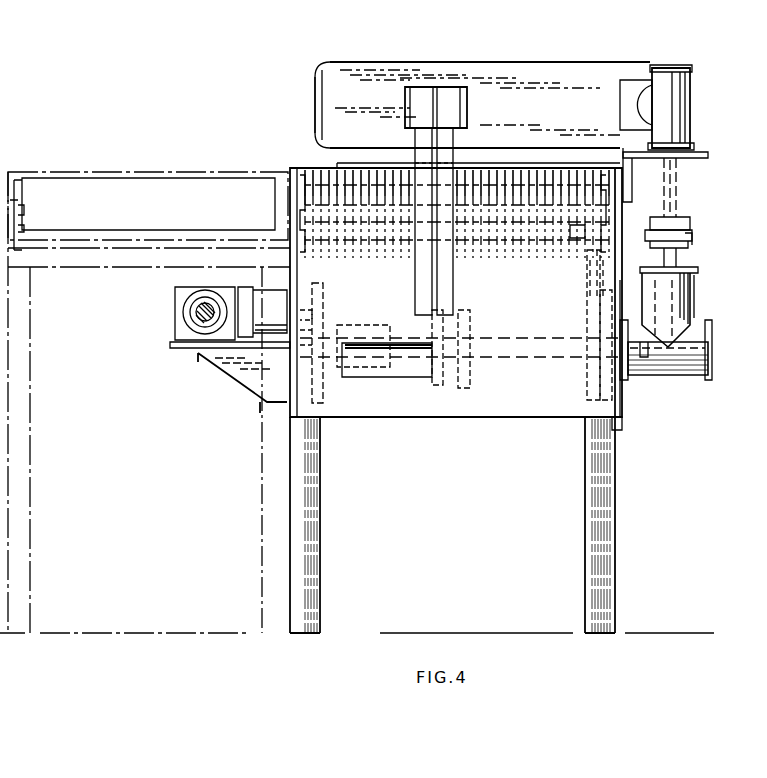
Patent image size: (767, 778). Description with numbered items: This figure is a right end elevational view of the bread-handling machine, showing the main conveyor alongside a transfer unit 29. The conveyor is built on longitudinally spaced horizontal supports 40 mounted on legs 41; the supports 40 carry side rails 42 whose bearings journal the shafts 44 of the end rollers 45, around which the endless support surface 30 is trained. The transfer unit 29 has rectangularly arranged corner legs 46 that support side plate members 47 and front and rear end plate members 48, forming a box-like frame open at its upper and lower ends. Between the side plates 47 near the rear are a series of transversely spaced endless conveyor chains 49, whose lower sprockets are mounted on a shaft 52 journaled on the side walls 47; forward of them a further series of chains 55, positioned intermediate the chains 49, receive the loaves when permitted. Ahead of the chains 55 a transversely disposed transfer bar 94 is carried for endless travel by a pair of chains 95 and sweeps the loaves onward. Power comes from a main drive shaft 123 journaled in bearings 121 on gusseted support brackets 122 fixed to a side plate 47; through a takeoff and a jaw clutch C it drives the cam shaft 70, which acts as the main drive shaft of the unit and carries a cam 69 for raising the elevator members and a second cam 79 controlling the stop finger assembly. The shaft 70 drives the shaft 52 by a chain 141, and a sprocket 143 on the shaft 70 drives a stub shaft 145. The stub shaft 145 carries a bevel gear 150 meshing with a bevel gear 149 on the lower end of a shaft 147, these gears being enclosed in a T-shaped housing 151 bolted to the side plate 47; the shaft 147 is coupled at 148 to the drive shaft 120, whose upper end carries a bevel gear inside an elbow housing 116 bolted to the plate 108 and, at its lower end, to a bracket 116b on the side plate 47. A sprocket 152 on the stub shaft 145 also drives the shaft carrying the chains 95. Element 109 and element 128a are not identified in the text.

The transfer unit 29 is at (406, 434).
The endless support surface 30 is at (238, 168).
The horizontal supports 40 is at (134, 266).
The legs 41 is at (20, 477).
The side rails 42 is at (12, 192).
The shafts 44 is at (20, 217).
The end rollers 45 is at (166, 190).
The corner legs 46 is at (310, 570).
The side plate members 47 is at (620, 404).
The end plate members 48 is at (524, 410).
The endless conveyor chains 49 is at (405, 258).
The shaft 52 is at (617, 207).
The endless conveyor chains 55 is at (512, 258).
The cam 69 is at (436, 385).
The cam shaft 70 is at (520, 358).
The second cam 79 is at (464, 385).
The transfer bar 94 is at (518, 165).
The endless chains 95 is at (578, 245).
The plate 108 is at (510, 72).
The hopper support plate 109 is at (452, 95).
The elbow housing 116 is at (651, 98).
The bracket 116b is at (700, 152).
The drive shaft 120 is at (668, 200).
The bearings 121 is at (182, 328).
The gusseted support brackets 122 is at (245, 368).
The main drive shaft 123 is at (190, 312).
The drive block 128a is at (320, 328).
The clutch C is at (368, 328).
The chain 141 is at (590, 282).
The sprocket 143 is at (613, 430).
The stub shaft 145 is at (590, 345).
The shaft 147 is at (680, 305).
The coupling 148 is at (688, 236).
The bevel gear 149 is at (672, 332).
The bevel gear 150 is at (646, 355).
The T-shaped housing 151 is at (712, 353).
The sprocket 152 is at (592, 375).